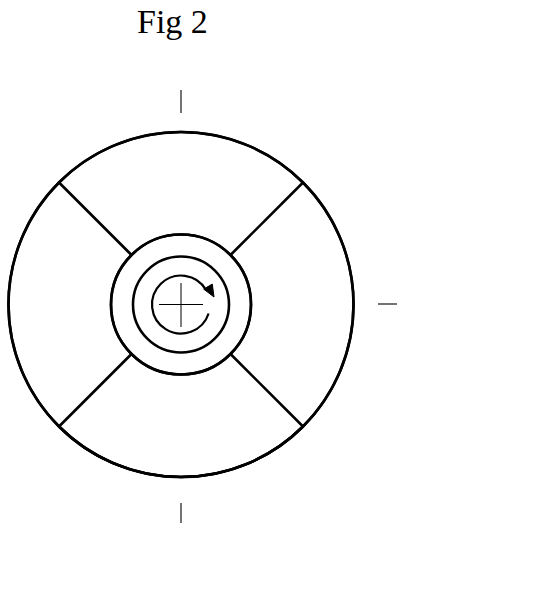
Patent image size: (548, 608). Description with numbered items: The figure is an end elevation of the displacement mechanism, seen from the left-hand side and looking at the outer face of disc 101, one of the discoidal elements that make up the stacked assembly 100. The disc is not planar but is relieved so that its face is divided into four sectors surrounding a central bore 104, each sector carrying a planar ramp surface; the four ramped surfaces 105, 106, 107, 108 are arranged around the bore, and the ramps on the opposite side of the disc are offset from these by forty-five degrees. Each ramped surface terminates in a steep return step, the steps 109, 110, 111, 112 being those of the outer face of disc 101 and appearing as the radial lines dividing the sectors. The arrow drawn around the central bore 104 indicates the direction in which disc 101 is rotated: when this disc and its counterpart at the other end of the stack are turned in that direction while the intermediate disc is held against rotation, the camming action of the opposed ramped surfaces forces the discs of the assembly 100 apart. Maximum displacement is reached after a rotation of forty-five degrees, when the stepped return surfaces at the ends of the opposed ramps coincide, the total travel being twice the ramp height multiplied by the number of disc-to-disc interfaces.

The stacked assembly 100 is at (241, 137).
The disc 101 is at (142, 476).
The central bore 104 is at (228, 322).
The ramped surface 105 is at (322, 302).
The ramped surface 106 is at (208, 432).
The ramped surface 107 is at (69, 305).
The ramped surface 108 is at (200, 203).
The return step 109 is at (277, 213).
The return step 110 is at (268, 398).
The return step 111 is at (89, 398).
The return step 112 is at (90, 210).